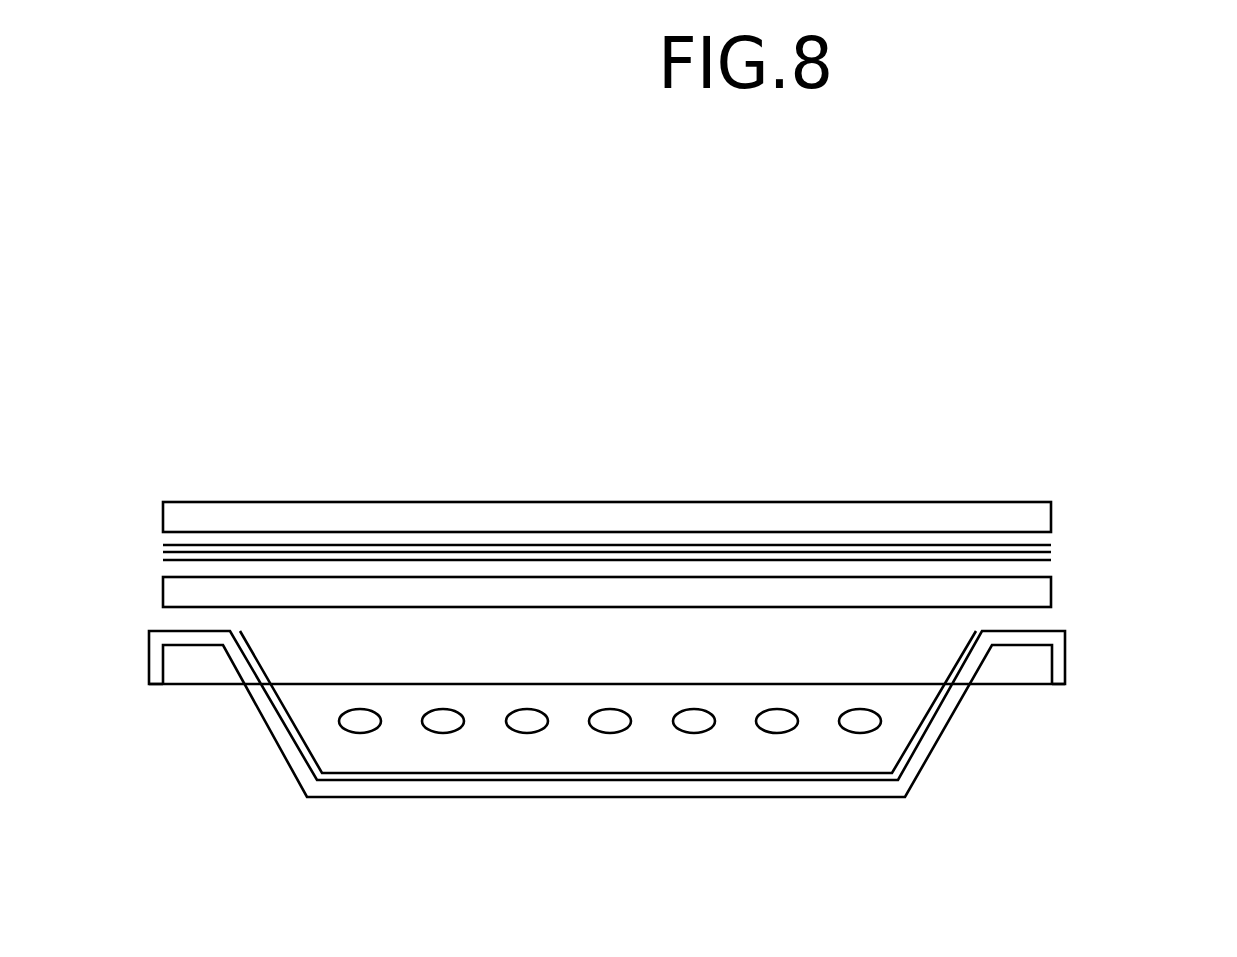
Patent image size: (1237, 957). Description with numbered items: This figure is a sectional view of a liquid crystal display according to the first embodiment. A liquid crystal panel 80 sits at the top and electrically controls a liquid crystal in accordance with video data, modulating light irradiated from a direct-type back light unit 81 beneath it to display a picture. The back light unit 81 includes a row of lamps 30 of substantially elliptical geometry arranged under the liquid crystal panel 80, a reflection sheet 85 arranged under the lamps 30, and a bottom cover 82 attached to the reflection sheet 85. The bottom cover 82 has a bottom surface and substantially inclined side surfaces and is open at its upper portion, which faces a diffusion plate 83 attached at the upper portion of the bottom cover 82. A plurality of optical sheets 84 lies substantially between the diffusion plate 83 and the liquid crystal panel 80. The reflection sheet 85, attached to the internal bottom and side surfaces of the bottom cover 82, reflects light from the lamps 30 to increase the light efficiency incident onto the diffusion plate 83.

The liquid crystal panel 80 is at (1035, 516).
The direct-type back light unit 81 is at (1148, 545).
The bottom cover 82 is at (940, 722).
The diffusion plate 83 is at (1042, 590).
The optical sheets 84 is at (1066, 540).
The reflection sheet 85 is at (570, 775).
The lamp 30 is at (365, 722).